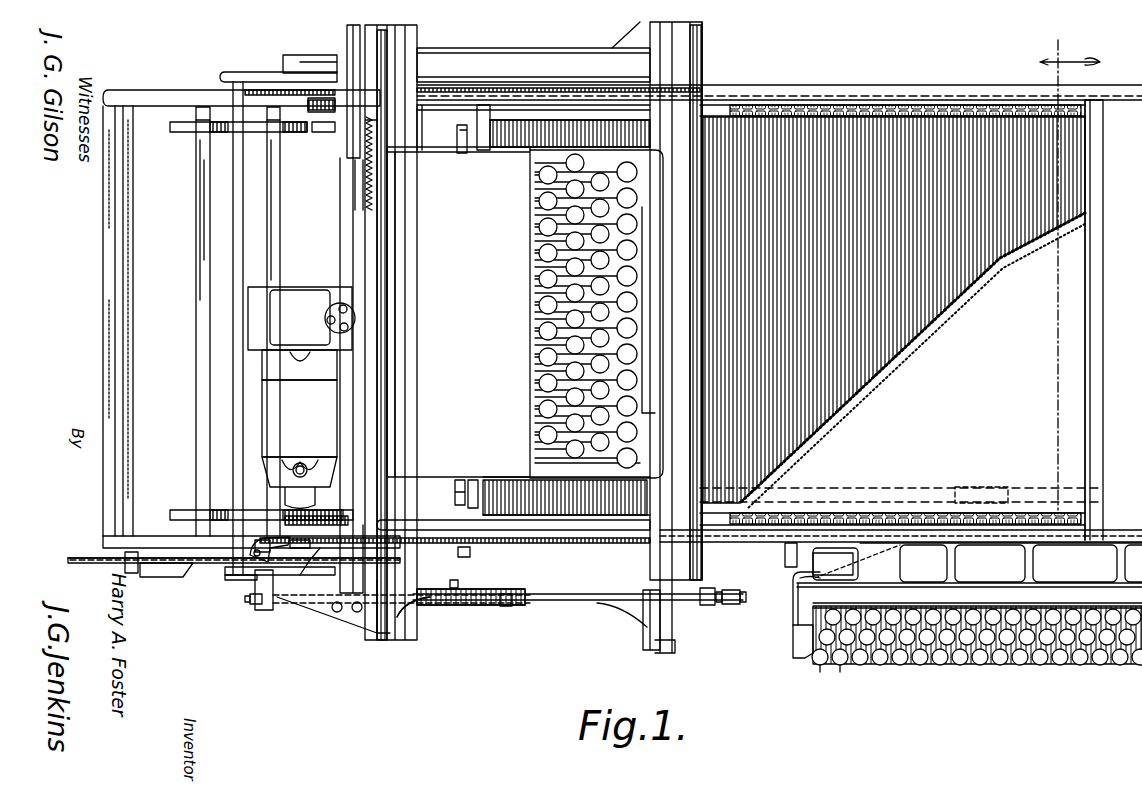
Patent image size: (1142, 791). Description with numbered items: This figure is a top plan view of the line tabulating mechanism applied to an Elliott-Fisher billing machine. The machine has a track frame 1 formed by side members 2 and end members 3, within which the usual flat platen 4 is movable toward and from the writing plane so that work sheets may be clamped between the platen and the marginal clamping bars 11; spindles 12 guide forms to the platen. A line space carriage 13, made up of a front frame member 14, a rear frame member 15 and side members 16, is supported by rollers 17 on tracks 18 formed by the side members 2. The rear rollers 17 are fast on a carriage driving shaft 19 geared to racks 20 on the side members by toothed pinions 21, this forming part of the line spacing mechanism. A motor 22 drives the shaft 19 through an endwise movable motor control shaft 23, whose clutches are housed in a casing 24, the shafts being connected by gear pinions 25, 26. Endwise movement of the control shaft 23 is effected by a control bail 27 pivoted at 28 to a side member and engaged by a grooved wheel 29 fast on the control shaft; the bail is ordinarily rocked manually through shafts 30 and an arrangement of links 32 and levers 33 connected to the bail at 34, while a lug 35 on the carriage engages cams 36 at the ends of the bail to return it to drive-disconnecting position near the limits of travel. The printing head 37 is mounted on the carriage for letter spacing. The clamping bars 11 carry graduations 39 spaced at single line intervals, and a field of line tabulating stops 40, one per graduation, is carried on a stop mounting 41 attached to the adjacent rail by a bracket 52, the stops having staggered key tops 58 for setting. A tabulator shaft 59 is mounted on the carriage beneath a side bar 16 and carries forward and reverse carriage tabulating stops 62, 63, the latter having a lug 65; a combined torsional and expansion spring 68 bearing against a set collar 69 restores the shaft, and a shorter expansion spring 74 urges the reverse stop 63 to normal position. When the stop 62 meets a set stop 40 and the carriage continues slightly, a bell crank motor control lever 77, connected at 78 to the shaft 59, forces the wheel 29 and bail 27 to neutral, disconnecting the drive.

The track frame 1 is at (822, 80).
The side members 2 is at (103, 547).
The end members 3 is at (104, 362).
The flat platen 4 is at (900, 312).
The marginal clamping bars 11 is at (1090, 110).
The spindles 12 is at (200, 387).
The line space carriage 13 is at (535, 46).
The front frame member 14 is at (703, 62).
The rear frame member 15 is at (390, 55).
The side members 16 is at (508, 342).
The rollers 17 is at (321, 304).
The tracks 18 is at (166, 103).
The carriage driving shaft 19 is at (340, 418).
The racks 20 is at (255, 90).
The toothed pinions 21 is at (328, 92).
The motor 22 is at (274, 392).
The motor control shaft 23 is at (262, 538).
The casing 24 is at (306, 288).
The gear pinion 25 is at (300, 538).
The gear pinion 26 is at (329, 492).
The control bail 27 is at (70, 560).
The pivot 28 is at (132, 552).
The grooved wheel 29 is at (302, 578).
The shafts 30 is at (790, 490).
The links 32 is at (472, 480).
The levers 33 is at (460, 153).
The connection to bail 34 is at (468, 557).
The lug 35 is at (443, 584).
The cams 36 is at (152, 580).
The printing head 37 is at (458, 312).
The graduations 39 is at (920, 104).
The line tabulating stops 40 is at (940, 665).
The stop mounting 41 is at (793, 652).
The bracket 52 is at (974, 562).
The line tabulating key tops 58 is at (838, 668).
The tabulator shaft 59 is at (540, 603).
The forward carriage tabulating stop 62 is at (708, 606).
The reverse carriage tabulating stop 63 is at (732, 606).
The lug 65 is at (742, 588).
The combined torsional and expansion spring 68 is at (452, 605).
The set collar 69 is at (505, 606).
The expansion spring 74 is at (719, 592).
The bell crank motor control lever 77 is at (250, 597).
The connection 78 is at (252, 604).